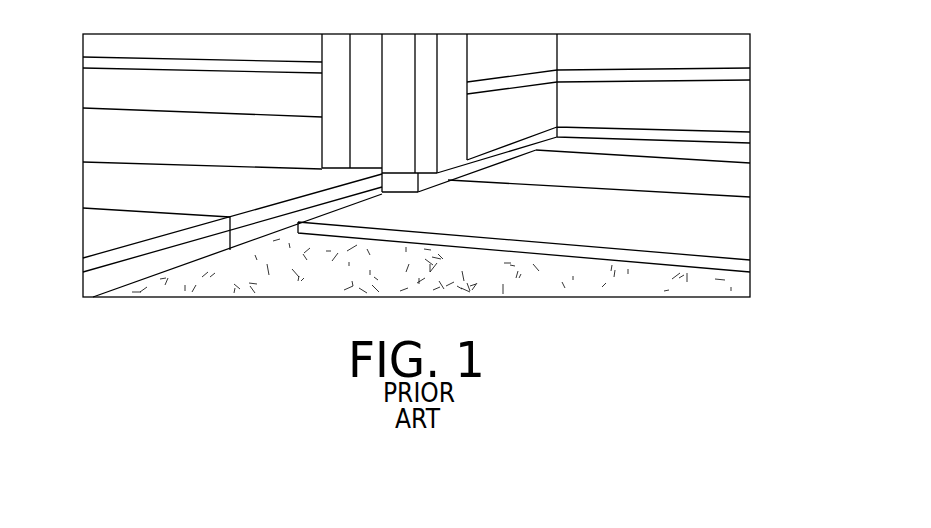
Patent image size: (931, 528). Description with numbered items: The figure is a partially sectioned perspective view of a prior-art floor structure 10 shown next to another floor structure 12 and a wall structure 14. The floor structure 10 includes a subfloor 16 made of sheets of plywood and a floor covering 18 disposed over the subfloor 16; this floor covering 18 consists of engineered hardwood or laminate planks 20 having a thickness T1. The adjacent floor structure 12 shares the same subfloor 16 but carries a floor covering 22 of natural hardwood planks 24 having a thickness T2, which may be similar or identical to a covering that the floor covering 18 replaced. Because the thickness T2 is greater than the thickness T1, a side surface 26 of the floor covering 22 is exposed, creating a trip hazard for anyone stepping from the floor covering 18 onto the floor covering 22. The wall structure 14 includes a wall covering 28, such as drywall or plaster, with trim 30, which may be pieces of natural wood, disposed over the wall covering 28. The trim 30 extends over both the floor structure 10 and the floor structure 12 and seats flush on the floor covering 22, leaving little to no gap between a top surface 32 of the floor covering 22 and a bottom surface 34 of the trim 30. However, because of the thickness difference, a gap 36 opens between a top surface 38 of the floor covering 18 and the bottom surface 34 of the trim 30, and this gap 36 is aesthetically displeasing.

The floor structure 10 is at (749, 151).
The floor structure 12 is at (132, 112).
The wall structure 14 is at (727, 101).
The subfloor 16 is at (685, 284).
The floor covering 18 is at (595, 259).
The planks 20 is at (737, 228).
The floor covering 22 is at (156, 274).
The natural hardwood planks 24 is at (82, 228).
The side surface 26 is at (316, 206).
The wall covering 28 is at (652, 50).
The trim 30 is at (690, 95).
The top surface 32 is at (180, 202).
The bottom surface 34 is at (492, 162).
The gap 36 is at (628, 150).
The top surface 38 is at (603, 227).
The thickness T1 is at (493, 260).
The thickness T2 is at (263, 248).